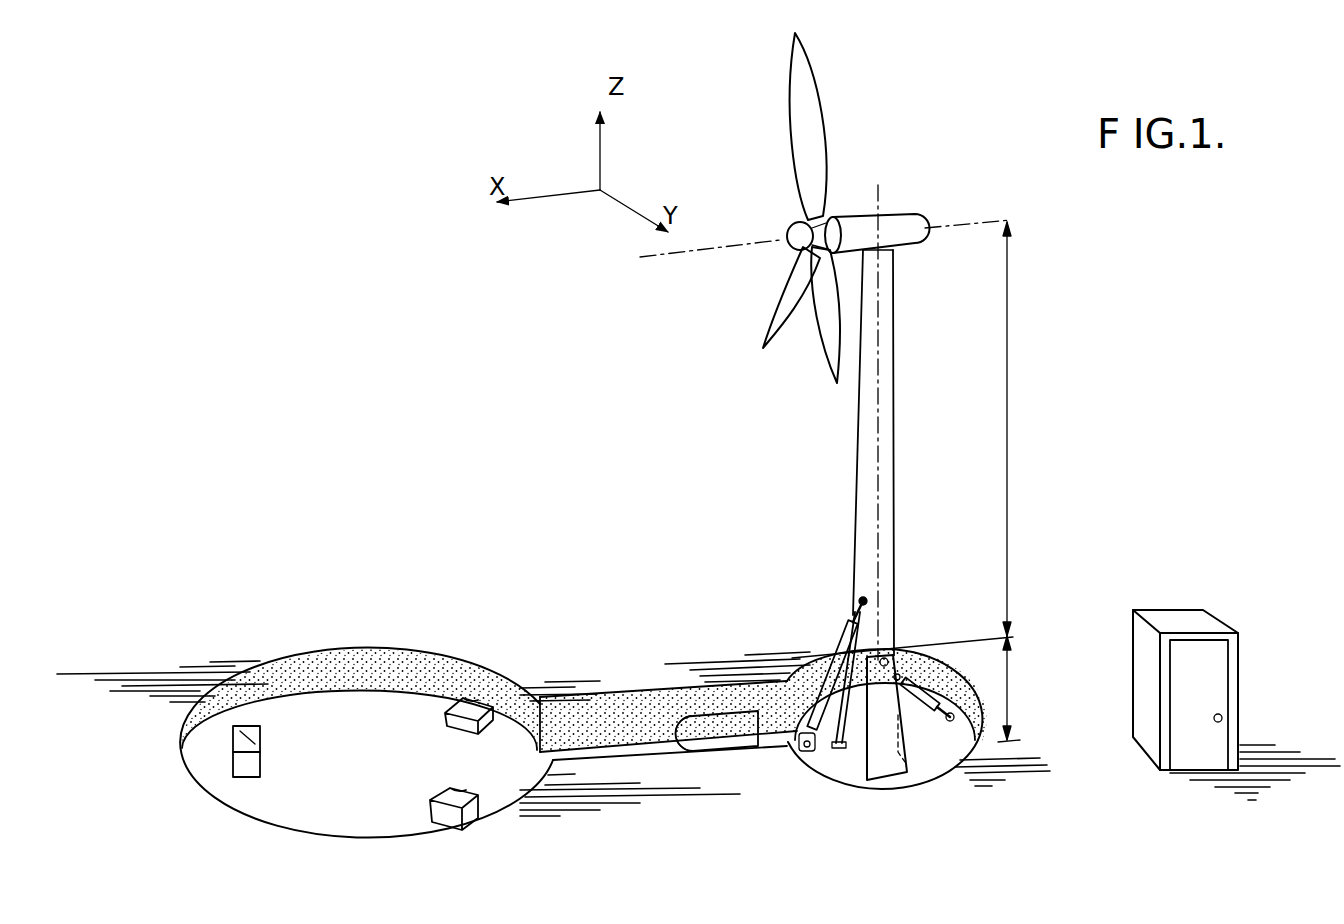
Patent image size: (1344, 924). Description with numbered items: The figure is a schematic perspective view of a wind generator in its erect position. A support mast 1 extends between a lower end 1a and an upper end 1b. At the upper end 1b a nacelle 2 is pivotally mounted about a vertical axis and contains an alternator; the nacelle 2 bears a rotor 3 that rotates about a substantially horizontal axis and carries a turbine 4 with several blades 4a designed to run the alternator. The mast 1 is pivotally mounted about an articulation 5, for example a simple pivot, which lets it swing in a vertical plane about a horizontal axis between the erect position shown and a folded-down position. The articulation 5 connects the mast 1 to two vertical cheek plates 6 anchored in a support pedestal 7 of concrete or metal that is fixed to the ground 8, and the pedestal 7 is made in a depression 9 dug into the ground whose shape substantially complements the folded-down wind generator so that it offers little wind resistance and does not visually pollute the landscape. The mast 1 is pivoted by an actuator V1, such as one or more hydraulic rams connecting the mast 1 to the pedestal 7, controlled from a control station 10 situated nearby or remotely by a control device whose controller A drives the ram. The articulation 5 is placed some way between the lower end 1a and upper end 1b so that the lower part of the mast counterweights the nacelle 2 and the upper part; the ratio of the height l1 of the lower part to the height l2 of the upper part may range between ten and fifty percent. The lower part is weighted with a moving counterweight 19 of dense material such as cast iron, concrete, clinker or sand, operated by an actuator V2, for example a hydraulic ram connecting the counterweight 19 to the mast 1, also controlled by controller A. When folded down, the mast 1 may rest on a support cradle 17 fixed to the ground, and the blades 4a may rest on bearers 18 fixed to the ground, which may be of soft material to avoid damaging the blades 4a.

The support mast 1 is at (858, 465).
The lower end 1a is at (913, 765).
The upper end 1b is at (885, 260).
The nacelle 2 is at (906, 227).
The rotor 3 is at (800, 237).
The turbine 4 is at (789, 220).
The blades 4a is at (810, 125).
The articulation 5 is at (888, 660).
The vertical cheek plates 6 is at (883, 745).
The support pedestal 7 is at (847, 768).
The ground 8 is at (771, 799).
The depression 9 is at (927, 658).
The control station 10 is at (1223, 617).
The support cradle 17 is at (705, 725).
The bearers 18 is at (458, 800).
The counterweight 19 is at (953, 727).
The actuator V1 is at (826, 666).
The actuator V2 is at (925, 692).
The controller A is at (878, 388).
The height of the lower part of the mast l1 is at (1015, 689).
The height of the upper part of the mast l2 is at (1017, 429).